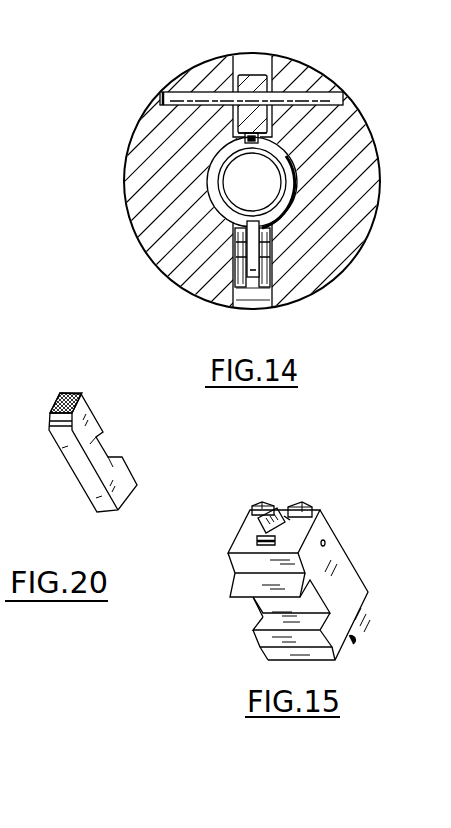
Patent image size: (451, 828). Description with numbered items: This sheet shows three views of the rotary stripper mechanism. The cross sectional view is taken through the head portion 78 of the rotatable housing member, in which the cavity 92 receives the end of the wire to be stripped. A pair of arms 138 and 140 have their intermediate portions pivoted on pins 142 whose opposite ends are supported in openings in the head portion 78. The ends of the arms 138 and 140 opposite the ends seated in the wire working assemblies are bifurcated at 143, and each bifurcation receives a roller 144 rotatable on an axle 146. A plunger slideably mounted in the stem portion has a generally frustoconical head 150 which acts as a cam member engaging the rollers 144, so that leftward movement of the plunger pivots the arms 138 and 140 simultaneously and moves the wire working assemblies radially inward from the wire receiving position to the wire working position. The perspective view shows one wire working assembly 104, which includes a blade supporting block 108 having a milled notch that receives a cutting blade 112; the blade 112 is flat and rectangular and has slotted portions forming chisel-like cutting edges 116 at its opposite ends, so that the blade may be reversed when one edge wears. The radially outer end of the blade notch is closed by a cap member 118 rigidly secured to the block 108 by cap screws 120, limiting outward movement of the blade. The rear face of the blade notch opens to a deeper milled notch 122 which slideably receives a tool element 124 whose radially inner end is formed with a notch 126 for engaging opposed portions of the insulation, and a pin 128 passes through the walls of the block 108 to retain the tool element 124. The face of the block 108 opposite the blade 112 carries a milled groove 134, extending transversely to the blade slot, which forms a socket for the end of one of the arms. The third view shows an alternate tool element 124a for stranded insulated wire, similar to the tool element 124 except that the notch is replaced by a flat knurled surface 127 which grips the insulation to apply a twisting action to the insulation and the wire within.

In FIG. 14, the head portion 78 is at (380, 192).
In FIG. 14, the cavity 92 is at (262, 303).
In FIG. 14, the arm 138 is at (253, 78).
In FIG. 14, the arm 140 is at (268, 262).
In FIG. 14, the pin 142 is at (333, 97).
In FIG. 14, the bifurcation 143 is at (264, 136).
In FIG. 14, the roller 144 is at (262, 140).
In FIG. 14, the axle 146 is at (237, 246).
In FIG. 14, the frustoconical head 150 is at (270, 192).
In FIG. 15, the wire working assembly 104 is at (328, 498).
In FIG. 15, the blade supporting block 108 is at (345, 577).
In FIG. 15, the cutting blade 112 is at (298, 502).
In FIG. 15, the cutting edge 116 is at (282, 508).
In FIG. 15, the cap member 118 is at (352, 619).
In FIG. 15, the cap screw 120 is at (353, 642).
In FIG. 15, the milled notch 122 is at (318, 522).
In FIG. 15, the tool element 124 is at (258, 535).
In FIG. 15, the notch 126 is at (262, 520).
In FIG. 15, the pin 128 is at (328, 543).
In FIG. 15, the milled groove 134 is at (262, 605).
In FIG. 20, the tool element 124a is at (88, 480).
In FIG. 20, the knurled surface 127 is at (64, 392).